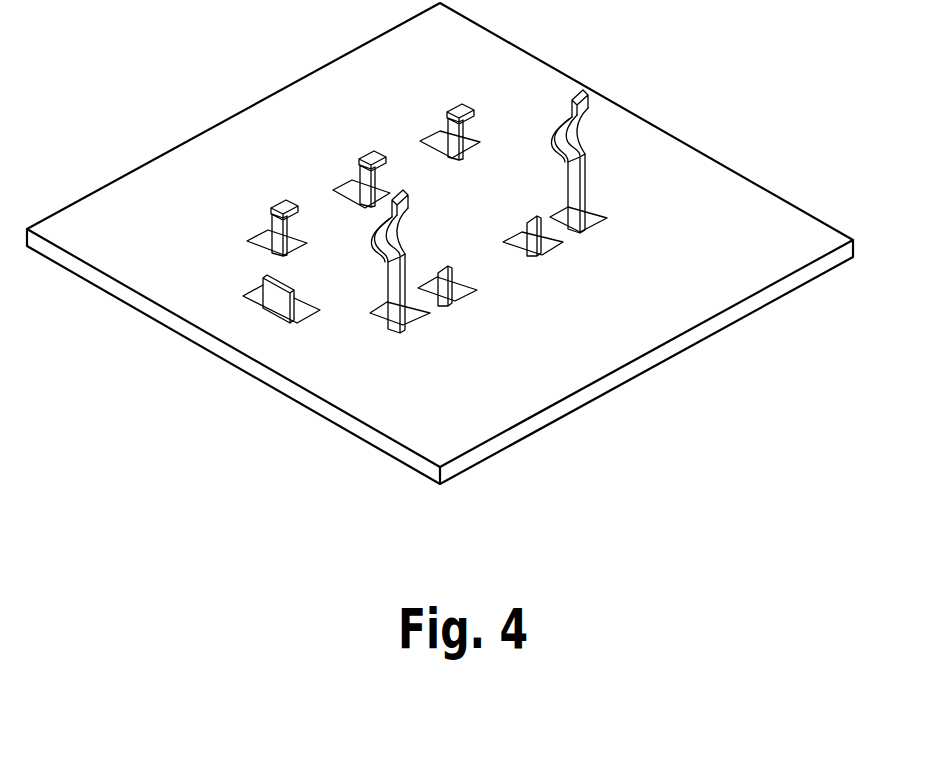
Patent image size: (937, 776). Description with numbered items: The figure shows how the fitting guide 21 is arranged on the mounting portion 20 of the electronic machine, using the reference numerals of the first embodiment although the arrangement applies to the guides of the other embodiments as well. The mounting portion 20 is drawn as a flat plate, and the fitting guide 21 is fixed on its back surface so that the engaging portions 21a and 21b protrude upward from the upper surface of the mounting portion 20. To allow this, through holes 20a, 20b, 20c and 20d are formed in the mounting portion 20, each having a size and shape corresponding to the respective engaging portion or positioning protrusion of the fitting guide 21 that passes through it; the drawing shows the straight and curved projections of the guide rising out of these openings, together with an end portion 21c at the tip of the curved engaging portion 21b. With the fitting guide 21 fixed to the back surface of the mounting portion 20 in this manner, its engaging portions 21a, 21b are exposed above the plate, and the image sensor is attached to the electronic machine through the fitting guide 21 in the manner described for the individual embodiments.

The mounting portion 20 is at (285, 350).
The through hole 20a is at (297, 250).
The through hole 20b is at (417, 327).
The through hole 20c is at (460, 302).
The through hole 20d is at (318, 317).
The fitting guide 21 is at (591, 128).
The engaging portion 21a is at (454, 104).
The engaging portion 21b is at (632, 157).
The tip end of terminal pin 21c is at (623, 70).